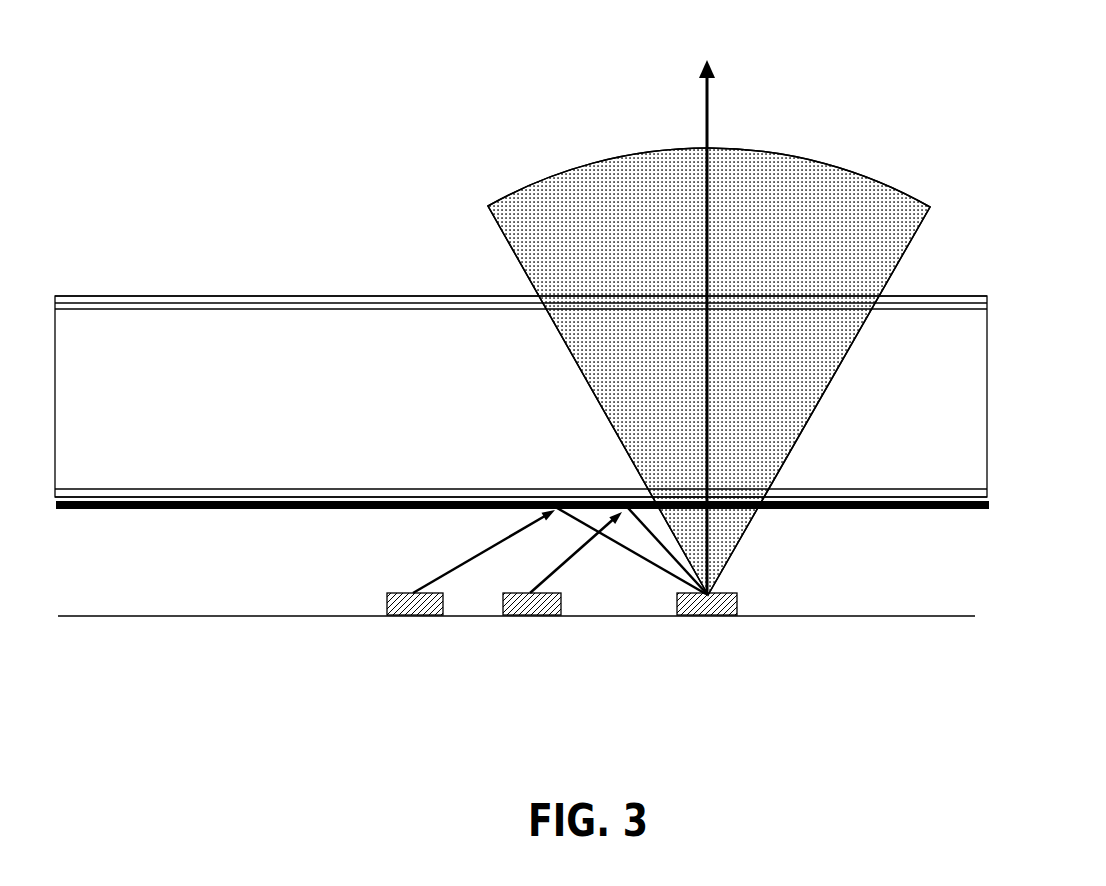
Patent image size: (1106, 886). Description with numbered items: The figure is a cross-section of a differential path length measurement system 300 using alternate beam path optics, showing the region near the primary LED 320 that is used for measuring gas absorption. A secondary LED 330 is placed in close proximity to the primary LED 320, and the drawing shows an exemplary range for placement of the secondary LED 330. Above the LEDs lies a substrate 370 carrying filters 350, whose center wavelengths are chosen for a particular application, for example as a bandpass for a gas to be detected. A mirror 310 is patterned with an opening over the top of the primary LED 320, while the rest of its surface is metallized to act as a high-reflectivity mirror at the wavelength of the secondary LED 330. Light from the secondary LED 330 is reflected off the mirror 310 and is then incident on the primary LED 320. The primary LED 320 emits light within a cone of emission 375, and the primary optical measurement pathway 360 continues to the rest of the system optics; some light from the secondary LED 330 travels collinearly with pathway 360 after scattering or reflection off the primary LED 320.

The differential path length measurement system 300 is at (283, 727).
The mirror 310 is at (260, 512).
The primary LED 320 is at (731, 617).
The secondary LED 330 is at (422, 618).
The filters 350 is at (457, 491).
The primary optical measurement pathway 360 is at (727, 187).
The substrate 370 is at (988, 360).
The cone of emission 375 is at (923, 198).